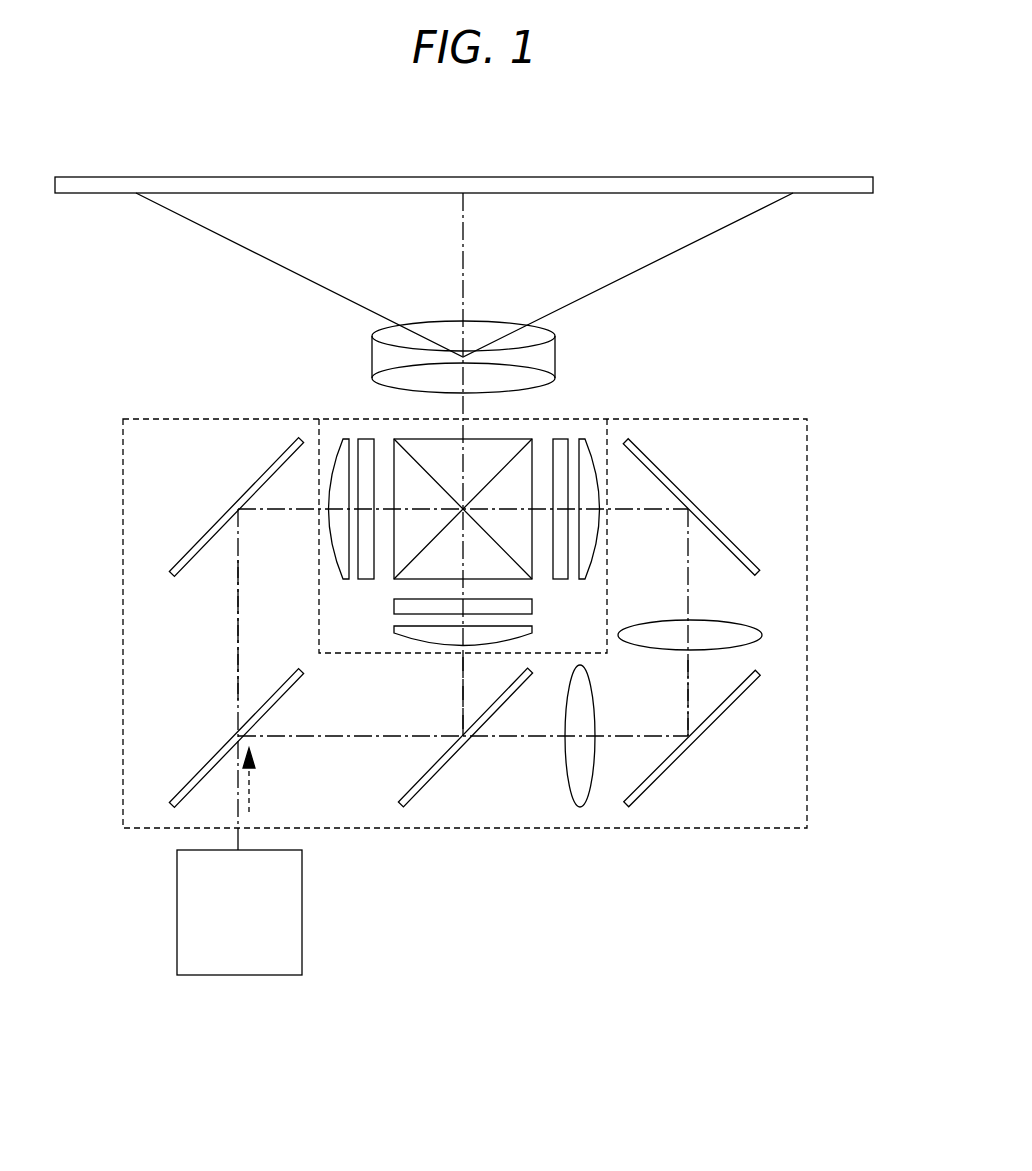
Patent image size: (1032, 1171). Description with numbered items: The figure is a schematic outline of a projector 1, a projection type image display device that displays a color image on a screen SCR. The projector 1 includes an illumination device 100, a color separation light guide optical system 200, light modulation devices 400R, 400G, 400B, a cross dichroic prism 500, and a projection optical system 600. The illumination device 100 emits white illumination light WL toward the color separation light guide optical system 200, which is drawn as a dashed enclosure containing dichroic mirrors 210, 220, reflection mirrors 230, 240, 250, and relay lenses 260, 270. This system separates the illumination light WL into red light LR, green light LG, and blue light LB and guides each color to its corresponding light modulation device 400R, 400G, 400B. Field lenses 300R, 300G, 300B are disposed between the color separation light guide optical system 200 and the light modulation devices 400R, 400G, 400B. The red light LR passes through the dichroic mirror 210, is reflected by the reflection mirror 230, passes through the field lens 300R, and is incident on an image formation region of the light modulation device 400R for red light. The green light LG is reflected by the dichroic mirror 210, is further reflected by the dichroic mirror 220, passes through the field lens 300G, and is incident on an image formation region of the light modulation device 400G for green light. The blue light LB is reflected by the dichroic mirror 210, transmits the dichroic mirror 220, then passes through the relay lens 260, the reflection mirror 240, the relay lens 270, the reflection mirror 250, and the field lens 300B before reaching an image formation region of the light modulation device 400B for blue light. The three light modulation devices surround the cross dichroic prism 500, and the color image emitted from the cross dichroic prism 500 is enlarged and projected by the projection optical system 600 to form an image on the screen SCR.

The projector 1 is at (838, 277).
The illumination device 100 is at (302, 908).
The color separation light guide optical system 200 is at (610, 830).
The dichroic mirror 210 is at (202, 767).
The dichroic mirror 220 is at (440, 772).
The reflection mirror 230 is at (212, 525).
The reflection mirror 240 is at (715, 720).
The reflection mirror 250 is at (718, 525).
The relay lens 260 is at (565, 757).
The relay lens 270 is at (712, 622).
The field lens 300R is at (343, 438).
The field lens 300G is at (400, 628).
The field lens 300B is at (580, 438).
The light modulation device for red light 400R is at (367, 438).
The light modulation device for green light 400G is at (394, 607).
The light modulation device for blue light 400B is at (558, 438).
The cross dichroic prism 500 is at (487, 447).
The projection optical system 600 is at (443, 333).
The screen SCR is at (833, 187).
The illumination light WL is at (252, 790).
The red light LR is at (238, 645).
The green light LG is at (463, 691).
The blue light LB is at (652, 733).